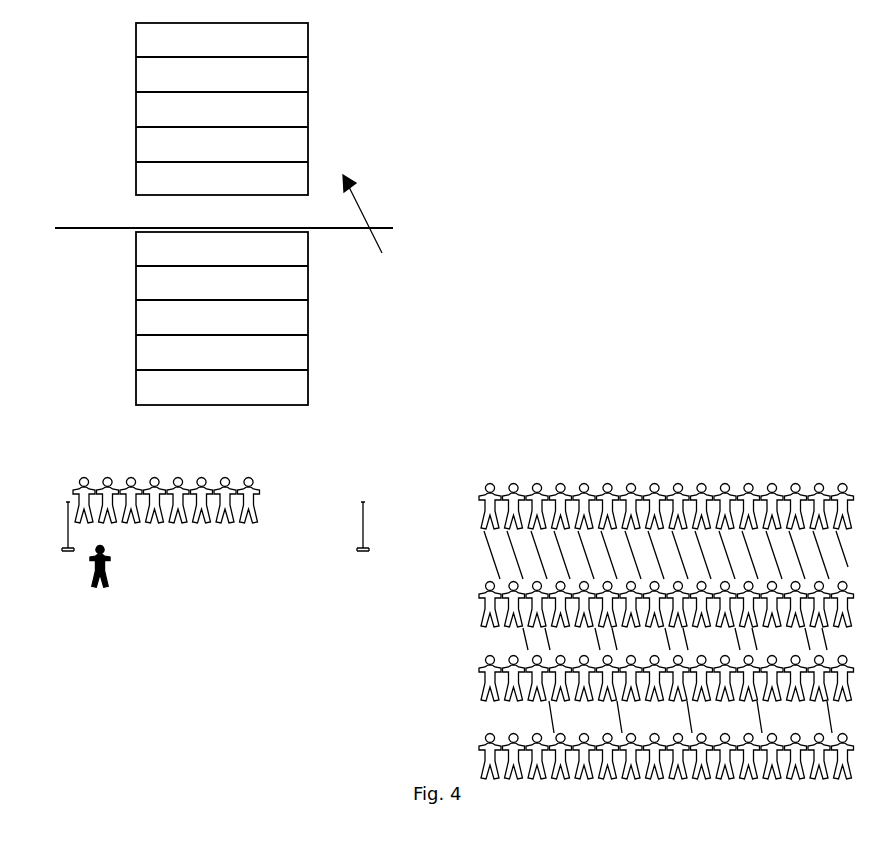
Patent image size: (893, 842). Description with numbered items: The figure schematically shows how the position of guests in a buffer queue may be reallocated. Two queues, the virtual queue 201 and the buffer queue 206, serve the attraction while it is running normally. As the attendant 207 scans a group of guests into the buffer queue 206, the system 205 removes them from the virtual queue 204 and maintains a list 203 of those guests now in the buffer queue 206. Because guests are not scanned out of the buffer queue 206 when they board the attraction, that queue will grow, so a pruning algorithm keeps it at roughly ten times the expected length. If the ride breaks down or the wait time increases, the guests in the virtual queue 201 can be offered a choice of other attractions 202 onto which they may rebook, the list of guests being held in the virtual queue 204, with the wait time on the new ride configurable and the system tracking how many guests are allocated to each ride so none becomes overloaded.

The virtual queue 201 is at (650, 493).
The other attractions 202 is at (483, 752).
The list 203 is at (174, 109).
The virtual queue 204 is at (174, 318).
The system 205 is at (237, 217).
The buffer queue 206 is at (215, 494).
The attendant 207 is at (98, 582).